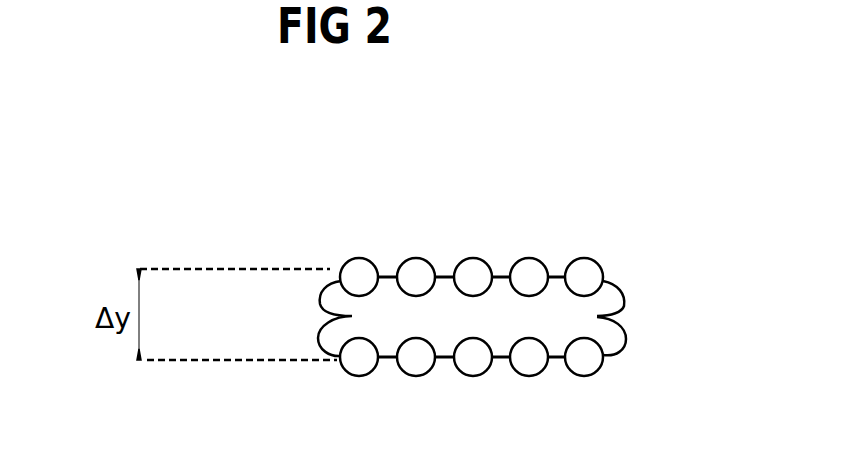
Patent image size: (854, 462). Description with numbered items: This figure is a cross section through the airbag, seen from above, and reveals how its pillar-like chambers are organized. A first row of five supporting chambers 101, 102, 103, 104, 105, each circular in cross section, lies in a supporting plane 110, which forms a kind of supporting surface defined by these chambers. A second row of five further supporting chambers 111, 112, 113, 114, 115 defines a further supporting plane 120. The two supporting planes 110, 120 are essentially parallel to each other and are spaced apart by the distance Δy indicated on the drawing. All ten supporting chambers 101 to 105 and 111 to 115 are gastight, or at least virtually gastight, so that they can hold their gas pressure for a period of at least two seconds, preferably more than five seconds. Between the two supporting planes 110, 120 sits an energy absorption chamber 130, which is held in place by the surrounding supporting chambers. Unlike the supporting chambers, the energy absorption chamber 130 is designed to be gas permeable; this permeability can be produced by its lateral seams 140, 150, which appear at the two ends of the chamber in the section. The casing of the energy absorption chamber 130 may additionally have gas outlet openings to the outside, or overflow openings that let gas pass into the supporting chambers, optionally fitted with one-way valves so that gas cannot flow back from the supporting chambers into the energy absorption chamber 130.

The supporting chamber 101 is at (355, 265).
The supporting chamber 102 is at (416, 270).
The supporting chamber 103 is at (472, 272).
The supporting chamber 104 is at (528, 270).
The supporting chamber 105 is at (585, 270).
The further supporting chamber 111 is at (357, 368).
The further supporting chamber 112 is at (418, 367).
The further supporting chamber 113 is at (475, 365).
The further supporting chamber 114 is at (528, 365).
The further supporting chamber 115 is at (585, 365).
The supporting plane 110 is at (192, 267).
The further supporting plane 120 is at (230, 362).
The energy absorption chamber 130 is at (573, 310).
The lateral seam 140 is at (350, 313).
The lateral seam 150 is at (613, 320).